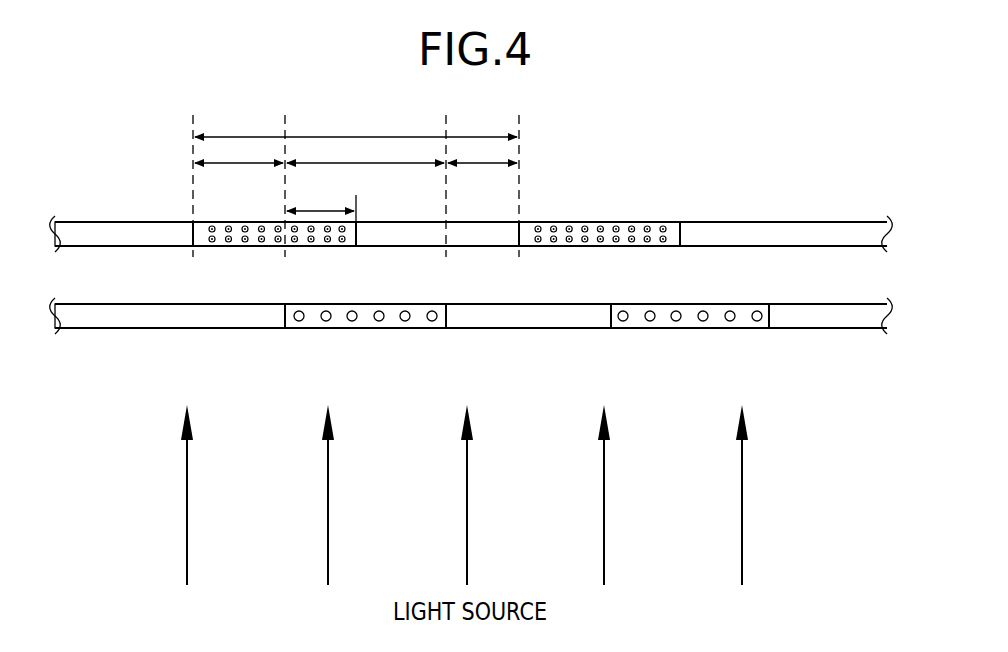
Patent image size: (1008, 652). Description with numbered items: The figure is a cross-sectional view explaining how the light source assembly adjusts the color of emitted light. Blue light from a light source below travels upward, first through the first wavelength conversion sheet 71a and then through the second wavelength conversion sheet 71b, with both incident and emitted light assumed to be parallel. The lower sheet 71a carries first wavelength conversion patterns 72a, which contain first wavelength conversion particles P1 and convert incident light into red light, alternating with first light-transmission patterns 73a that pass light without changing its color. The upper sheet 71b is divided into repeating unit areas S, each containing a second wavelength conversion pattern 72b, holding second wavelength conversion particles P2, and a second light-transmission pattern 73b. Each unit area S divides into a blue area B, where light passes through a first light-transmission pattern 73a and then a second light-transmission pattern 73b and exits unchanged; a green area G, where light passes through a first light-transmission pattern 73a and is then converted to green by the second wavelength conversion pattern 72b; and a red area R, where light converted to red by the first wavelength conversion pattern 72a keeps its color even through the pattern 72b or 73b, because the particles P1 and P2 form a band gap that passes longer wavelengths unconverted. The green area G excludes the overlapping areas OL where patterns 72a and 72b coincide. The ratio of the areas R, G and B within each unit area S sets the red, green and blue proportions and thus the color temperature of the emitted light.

The first wavelength conversion sheet 71a is at (300, 386).
The second wavelength conversion sheet 71b is at (168, 165).
The first wavelength conversion pattern 72a is at (297, 318).
The second wavelength conversion pattern 72b is at (203, 232).
The first light-transmission pattern 73a is at (223, 318).
The second light-transmission pattern 73b is at (135, 232).
The first wavelength conversion particles P1 is at (758, 320).
The second wavelength conversion particles P2 is at (663, 227).
The unit area S is at (356, 125).
The green area G is at (239, 178).
The red area R is at (365, 179).
The blue area B is at (482, 179).
The overlapping area OL is at (321, 204).